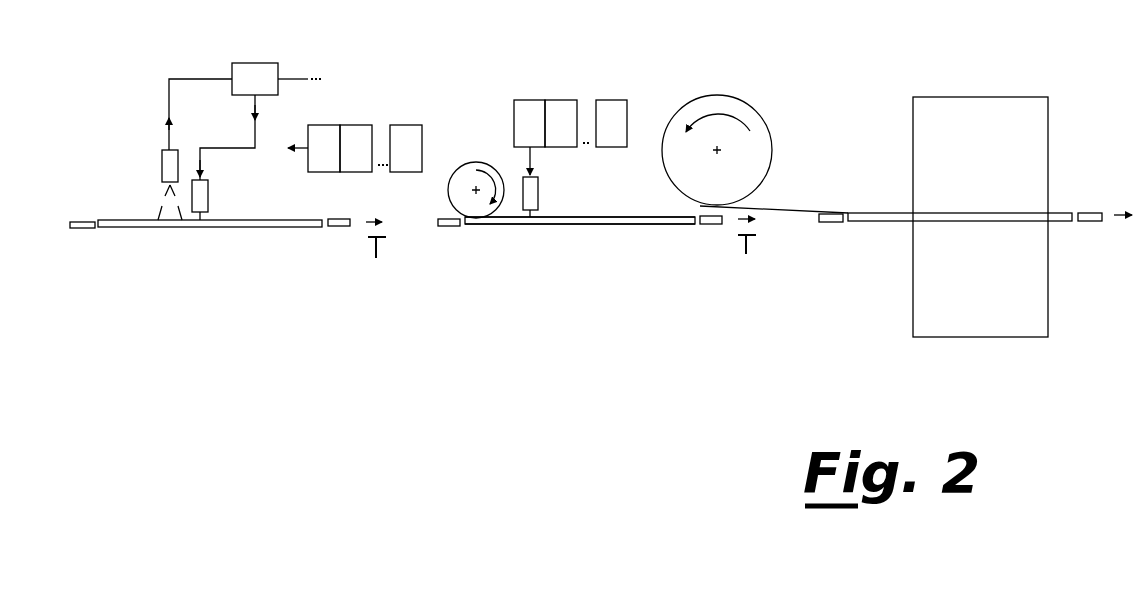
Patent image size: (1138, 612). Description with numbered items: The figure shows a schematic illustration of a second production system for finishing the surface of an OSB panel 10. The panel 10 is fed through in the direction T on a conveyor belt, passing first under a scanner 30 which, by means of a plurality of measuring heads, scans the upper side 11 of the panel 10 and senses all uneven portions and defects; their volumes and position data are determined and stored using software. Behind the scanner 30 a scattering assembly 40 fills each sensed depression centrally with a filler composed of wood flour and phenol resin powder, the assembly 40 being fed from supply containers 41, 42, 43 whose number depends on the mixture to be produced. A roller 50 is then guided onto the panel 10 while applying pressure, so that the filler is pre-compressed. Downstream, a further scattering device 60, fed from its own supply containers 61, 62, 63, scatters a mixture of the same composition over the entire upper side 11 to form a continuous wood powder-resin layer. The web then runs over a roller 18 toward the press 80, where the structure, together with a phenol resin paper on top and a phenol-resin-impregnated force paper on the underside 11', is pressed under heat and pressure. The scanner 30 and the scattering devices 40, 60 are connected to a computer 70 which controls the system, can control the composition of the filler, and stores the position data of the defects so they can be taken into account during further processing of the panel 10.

The panel 10 is at (233, 224).
The upper side 11 is at (580, 192).
The underside 11' is at (582, 254).
The roller 18 is at (778, 206).
The scanner 30 is at (162, 162).
The scattering assembly 40 is at (204, 192).
The supply container 41 is at (322, 136).
The supply container 42 is at (358, 134).
The supply container 43 is at (403, 136).
The roller 50 is at (466, 170).
The further scattering device 60 is at (540, 192).
The supply container 61 is at (526, 112).
The supply container 62 is at (562, 112).
The supply container 63 is at (612, 114).
The computer 70 is at (253, 80).
The press 80 is at (980, 115).